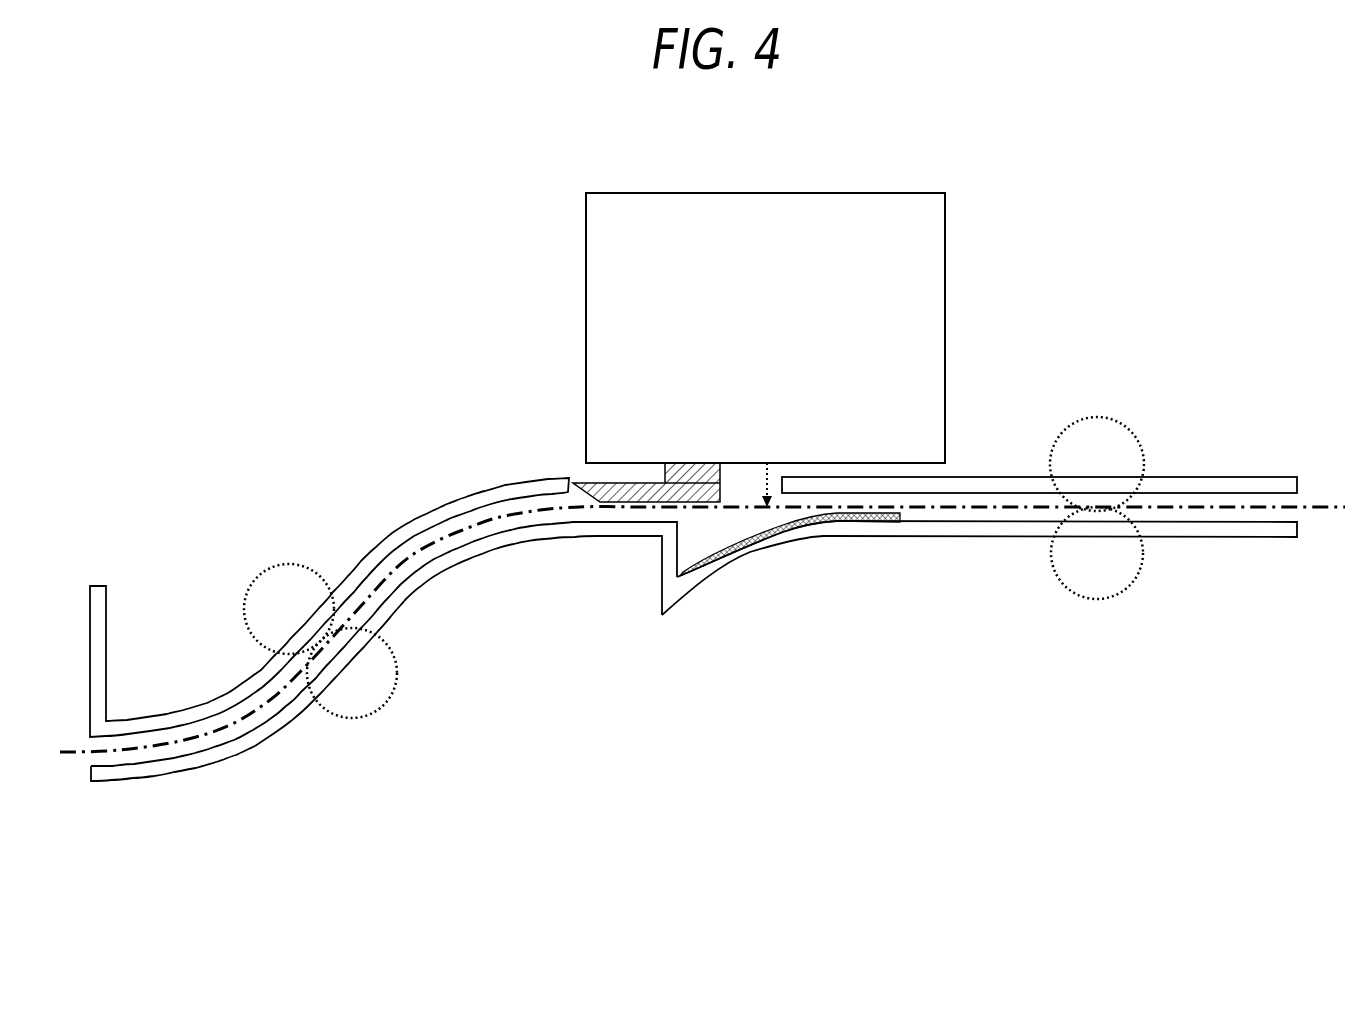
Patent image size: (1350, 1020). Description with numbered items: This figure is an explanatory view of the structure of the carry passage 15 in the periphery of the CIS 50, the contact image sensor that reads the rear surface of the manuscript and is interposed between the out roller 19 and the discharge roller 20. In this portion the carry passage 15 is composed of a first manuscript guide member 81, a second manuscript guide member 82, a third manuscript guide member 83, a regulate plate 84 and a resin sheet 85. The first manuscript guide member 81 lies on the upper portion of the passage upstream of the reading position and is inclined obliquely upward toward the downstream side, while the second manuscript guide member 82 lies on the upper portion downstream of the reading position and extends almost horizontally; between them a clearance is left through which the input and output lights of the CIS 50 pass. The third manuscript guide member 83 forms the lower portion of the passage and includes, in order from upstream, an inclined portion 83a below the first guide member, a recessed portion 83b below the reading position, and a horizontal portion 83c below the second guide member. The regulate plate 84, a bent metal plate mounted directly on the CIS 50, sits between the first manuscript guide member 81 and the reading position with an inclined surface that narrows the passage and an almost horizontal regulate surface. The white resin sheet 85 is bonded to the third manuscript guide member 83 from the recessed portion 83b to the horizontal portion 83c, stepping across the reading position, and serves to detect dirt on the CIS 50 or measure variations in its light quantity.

The carry passage 15 is at (1325, 504).
The out roller 19 is at (288, 564).
The discharge roller 20 is at (1097, 417).
The CIS 50 is at (763, 193).
The first manuscript guide member 81 is at (190, 675).
The second manuscript guide member 82 is at (1212, 445).
The third manuscript guide member 83 is at (694, 668).
The inclined portion 83a is at (243, 736).
The recessed portion 83b is at (690, 589).
The horizontal portion 83c is at (990, 538).
The regulate plate 84 is at (578, 481).
The resin sheet 85 is at (830, 527).